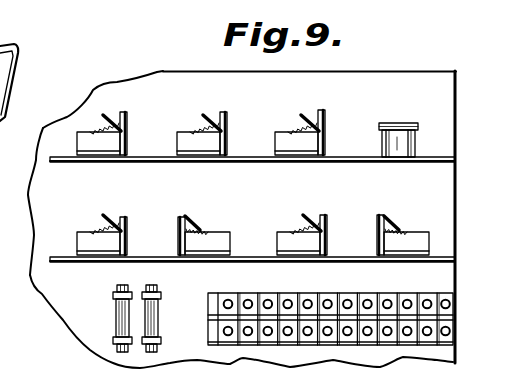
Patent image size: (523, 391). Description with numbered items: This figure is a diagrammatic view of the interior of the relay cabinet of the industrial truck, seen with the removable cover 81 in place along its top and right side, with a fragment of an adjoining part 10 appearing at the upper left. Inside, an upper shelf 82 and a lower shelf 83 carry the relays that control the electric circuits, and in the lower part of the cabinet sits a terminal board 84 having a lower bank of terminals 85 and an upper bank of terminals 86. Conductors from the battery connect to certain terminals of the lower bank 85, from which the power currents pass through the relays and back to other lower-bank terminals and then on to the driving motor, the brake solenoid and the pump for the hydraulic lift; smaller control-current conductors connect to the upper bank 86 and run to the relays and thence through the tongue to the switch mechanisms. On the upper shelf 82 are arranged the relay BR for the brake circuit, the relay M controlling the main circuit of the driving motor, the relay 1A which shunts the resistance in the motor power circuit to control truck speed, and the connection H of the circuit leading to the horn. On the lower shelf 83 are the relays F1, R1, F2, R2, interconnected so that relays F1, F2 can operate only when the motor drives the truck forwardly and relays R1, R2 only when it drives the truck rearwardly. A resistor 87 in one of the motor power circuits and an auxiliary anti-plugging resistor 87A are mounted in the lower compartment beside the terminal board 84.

The mounting bracket 10 is at (9, 95).
The removable cover 81 is at (448, 130).
The upper shelf 82 is at (432, 162).
The lower shelf 83 is at (437, 262).
The terminal board 84 is at (348, 313).
The lower bank of terminals 85 is at (448, 338).
The upper bank of terminals 86 is at (289, 294).
The resistor 87 is at (157, 318).
The auxiliary resistor 87A is at (120, 313).
The brake circuit relay BR is at (114, 131).
The main motor circuit relay M is at (203, 124).
The resistance shunting relay 1A is at (304, 115).
The horn circuit connection H is at (401, 125).
The forward relay F1 is at (105, 226).
The reverse relay R1 is at (204, 226).
The forward relay F2 is at (302, 226).
The reverse relay R2 is at (403, 226).